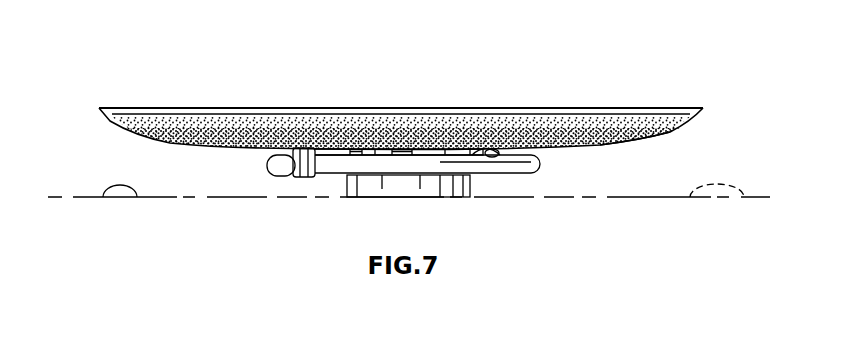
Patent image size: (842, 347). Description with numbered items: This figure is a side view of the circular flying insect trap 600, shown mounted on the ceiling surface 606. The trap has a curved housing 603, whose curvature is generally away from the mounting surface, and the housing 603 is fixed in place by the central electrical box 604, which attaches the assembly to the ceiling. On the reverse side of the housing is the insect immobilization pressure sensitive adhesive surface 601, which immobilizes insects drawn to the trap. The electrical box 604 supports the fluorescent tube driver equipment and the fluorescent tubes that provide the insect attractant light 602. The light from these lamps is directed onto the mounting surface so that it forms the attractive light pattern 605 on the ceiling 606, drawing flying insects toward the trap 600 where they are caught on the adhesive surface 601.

The flying insect trap 600 is at (370, 102).
The insect immobilization pressure sensitive adhesive surface 601 is at (656, 137).
The fluorescent tubes 602 is at (293, 178).
The curved housing 603 is at (655, 107).
The electrical box 604 is at (452, 197).
The attractive light pattern 605 is at (106, 203).
The ceiling 606 is at (693, 203).